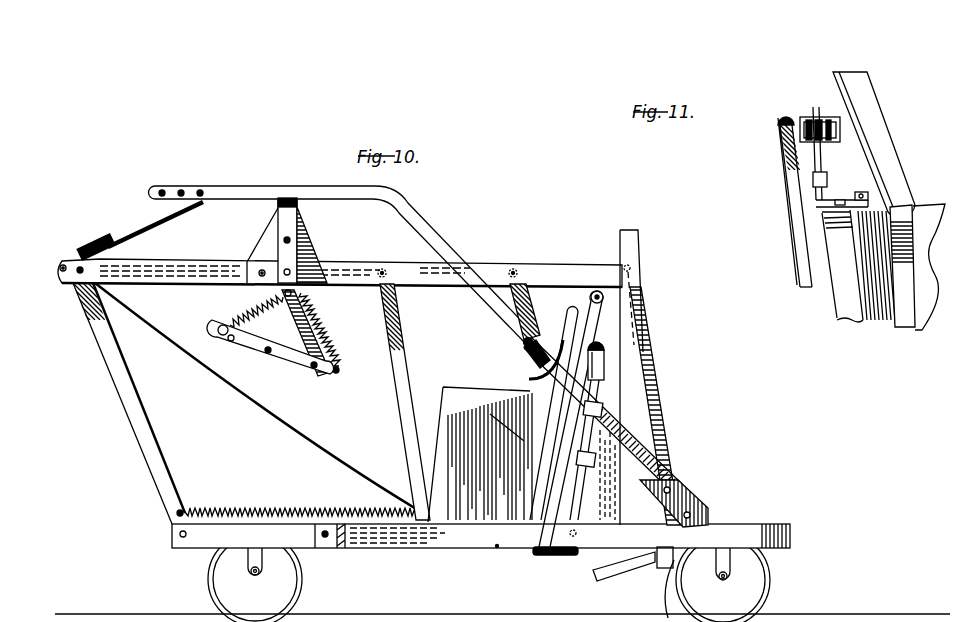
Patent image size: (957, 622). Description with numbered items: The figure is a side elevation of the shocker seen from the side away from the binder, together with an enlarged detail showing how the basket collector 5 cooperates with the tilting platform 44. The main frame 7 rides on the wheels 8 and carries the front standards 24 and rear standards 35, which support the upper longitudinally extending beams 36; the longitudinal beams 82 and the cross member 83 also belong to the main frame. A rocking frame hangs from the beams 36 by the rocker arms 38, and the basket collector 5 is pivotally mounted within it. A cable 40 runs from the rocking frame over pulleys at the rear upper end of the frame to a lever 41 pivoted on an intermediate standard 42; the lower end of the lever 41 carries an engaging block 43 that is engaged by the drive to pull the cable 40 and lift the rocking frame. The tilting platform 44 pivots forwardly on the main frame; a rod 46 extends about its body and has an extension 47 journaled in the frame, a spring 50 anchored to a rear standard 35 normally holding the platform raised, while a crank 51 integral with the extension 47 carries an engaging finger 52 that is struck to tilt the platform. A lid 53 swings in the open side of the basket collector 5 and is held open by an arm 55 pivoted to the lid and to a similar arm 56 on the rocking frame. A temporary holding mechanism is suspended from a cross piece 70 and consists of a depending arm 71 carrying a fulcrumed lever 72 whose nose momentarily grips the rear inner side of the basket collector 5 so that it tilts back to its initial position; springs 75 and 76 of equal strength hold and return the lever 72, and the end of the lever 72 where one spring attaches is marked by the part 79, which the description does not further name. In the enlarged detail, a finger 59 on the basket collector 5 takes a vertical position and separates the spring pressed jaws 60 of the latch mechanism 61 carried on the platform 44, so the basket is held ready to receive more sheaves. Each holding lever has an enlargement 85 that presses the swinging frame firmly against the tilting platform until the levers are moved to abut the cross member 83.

In FIG. 10, the basket collector 5 is at (446, 406).
In FIG. 11, the basket collector 5 is at (843, 292).
In FIG. 10, the main frame 7 is at (793, 540).
In FIG. 10, the wheels 8 is at (307, 576).
In FIG. 10, the front standards 24 is at (630, 261).
In FIG. 10, the rear standards 35 is at (127, 399).
In FIG. 10, the upper longitudinally extending beams 36 is at (551, 272).
In FIG. 10, the rocker arms 38 is at (405, 363).
In FIG. 10, the cable 40 is at (150, 228).
In FIG. 10, the lever 41 is at (447, 242).
In FIG. 10, the intermediate standard 42 is at (521, 288).
In FIG. 10, the engaging block 43 is at (681, 500).
In FIG. 10, the tilting platform 44 is at (603, 398).
In FIG. 11, the tilting platform 44 is at (782, 155).
In FIG. 10, the rod 46 is at (582, 492).
In FIG. 11, the rod 46 is at (778, 128).
In FIG. 10, the extension 47 is at (562, 556).
In FIG. 10, the spring 50 is at (266, 506).
In FIG. 10, the crank 51 is at (494, 417).
In FIG. 10, the engaging finger 52 is at (560, 332).
In FIG. 11, the lid 53 is at (837, 73).
In FIG. 10, the arm 55 is at (584, 300).
In FIG. 11, the arm 55 is at (883, 172).
In FIG. 11, the arm 56 is at (905, 256).
In FIG. 10, the finger 59 is at (600, 332).
In FIG. 11, the finger 59 is at (820, 163).
In FIG. 11, the spring pressed jaws 60 is at (835, 116).
In FIG. 10, the latch mechanism 61 is at (598, 347).
In FIG. 11, the latch mechanism 61 is at (803, 115).
In FIG. 10, the cross piece 70 is at (288, 234).
In FIG. 10, the depending arm 71 is at (297, 331).
In FIG. 10, the lever 72 is at (304, 371).
In FIG. 10, the spring 75 is at (319, 321).
In FIG. 10, the spring 76 is at (254, 309).
In FIG. 10, the lever eye 79 is at (216, 330).
In FIG. 10, the longitudinal beams 82 is at (497, 548).
In FIG. 10, the cross member 83 is at (659, 568).
In FIG. 10, the enlargement 85 is at (612, 570).